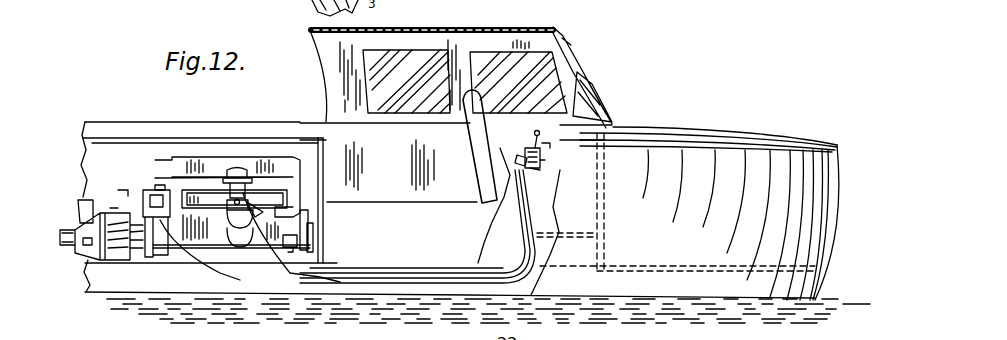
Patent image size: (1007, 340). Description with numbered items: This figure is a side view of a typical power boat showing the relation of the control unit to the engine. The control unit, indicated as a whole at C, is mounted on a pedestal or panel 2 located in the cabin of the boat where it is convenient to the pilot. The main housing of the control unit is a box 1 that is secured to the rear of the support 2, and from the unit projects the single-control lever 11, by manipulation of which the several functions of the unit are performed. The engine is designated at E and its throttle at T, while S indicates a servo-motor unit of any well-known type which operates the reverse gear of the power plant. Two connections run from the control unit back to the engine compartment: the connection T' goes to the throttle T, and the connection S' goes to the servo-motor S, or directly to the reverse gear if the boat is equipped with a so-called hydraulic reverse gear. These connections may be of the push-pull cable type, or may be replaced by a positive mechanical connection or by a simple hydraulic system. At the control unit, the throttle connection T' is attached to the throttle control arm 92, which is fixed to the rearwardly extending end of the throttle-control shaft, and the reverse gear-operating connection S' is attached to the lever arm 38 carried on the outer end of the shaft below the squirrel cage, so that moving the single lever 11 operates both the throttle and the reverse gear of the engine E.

The servo-motor unit S is at (152, 147).
The engine E is at (200, 165).
The throttle T is at (246, 173).
The connection going to the servo-motor S' is at (250, 241).
The connection going to the throttle T' is at (417, 226).
The single-control lever 11 is at (537, 130).
The pedestal or panel 2 is at (547, 143).
The throttle control arm 92 is at (520, 153).
The control unit C is at (542, 155).
The box 1 is at (541, 165).
The lever arm 38 is at (537, 170).